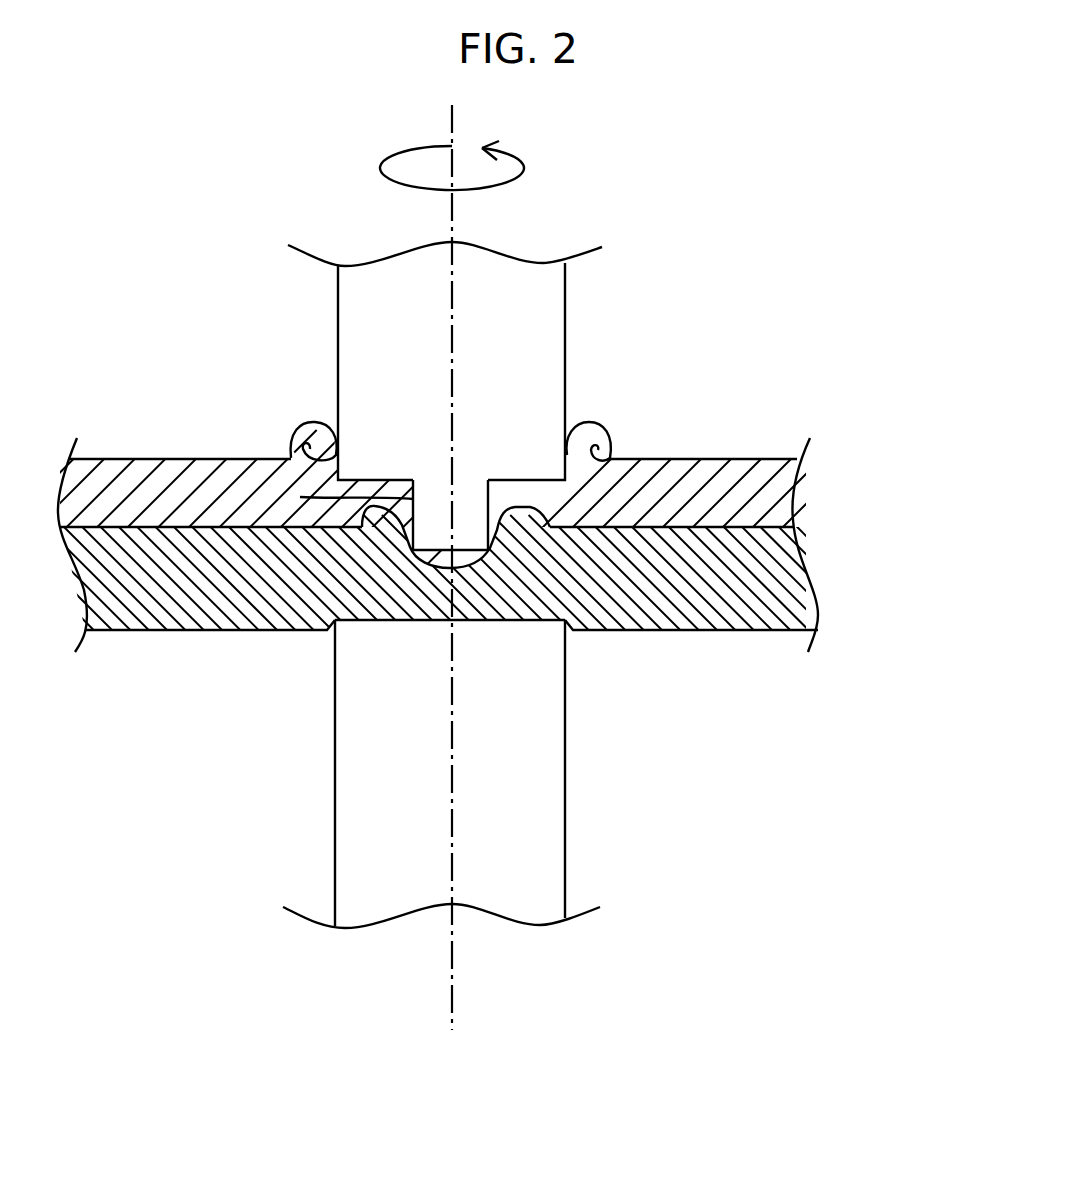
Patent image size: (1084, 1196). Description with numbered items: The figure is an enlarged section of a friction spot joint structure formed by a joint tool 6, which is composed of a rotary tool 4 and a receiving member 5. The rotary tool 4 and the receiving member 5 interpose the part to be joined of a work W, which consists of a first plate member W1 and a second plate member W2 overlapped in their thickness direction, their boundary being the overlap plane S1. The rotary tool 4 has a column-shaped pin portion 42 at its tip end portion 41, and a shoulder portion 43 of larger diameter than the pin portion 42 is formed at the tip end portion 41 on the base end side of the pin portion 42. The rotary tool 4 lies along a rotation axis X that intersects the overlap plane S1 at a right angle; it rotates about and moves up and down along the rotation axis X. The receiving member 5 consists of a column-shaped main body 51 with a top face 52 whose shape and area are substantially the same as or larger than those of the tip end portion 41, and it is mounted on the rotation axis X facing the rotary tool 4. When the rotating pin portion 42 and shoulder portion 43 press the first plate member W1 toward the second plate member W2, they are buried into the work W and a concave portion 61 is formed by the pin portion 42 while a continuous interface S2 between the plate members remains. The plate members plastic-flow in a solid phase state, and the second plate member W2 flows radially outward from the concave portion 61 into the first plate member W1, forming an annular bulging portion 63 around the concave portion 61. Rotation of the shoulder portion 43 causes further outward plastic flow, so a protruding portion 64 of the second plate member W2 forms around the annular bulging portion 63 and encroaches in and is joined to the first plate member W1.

The rotary tool 4 is at (441, 396).
The tip end portion 41 is at (338, 328).
The pin portion 42 is at (300, 497).
The shoulder portion 43 is at (535, 505).
The receiving member 5 is at (460, 763).
The main body 51 is at (567, 755).
The top face 52 is at (508, 603).
The joint tool 6 is at (563, 439).
The concave portion 61 is at (488, 510).
The annular bulging portion 63 is at (525, 499).
The protruding portion 64 is at (545, 511).
The overlap plane S1 is at (142, 525).
The continuous interface S2 is at (438, 565).
The work W is at (481, 457).
The first plate member W1 is at (768, 493).
The second plate member W2 is at (476, 580).
The rotation axis X is at (452, 983).